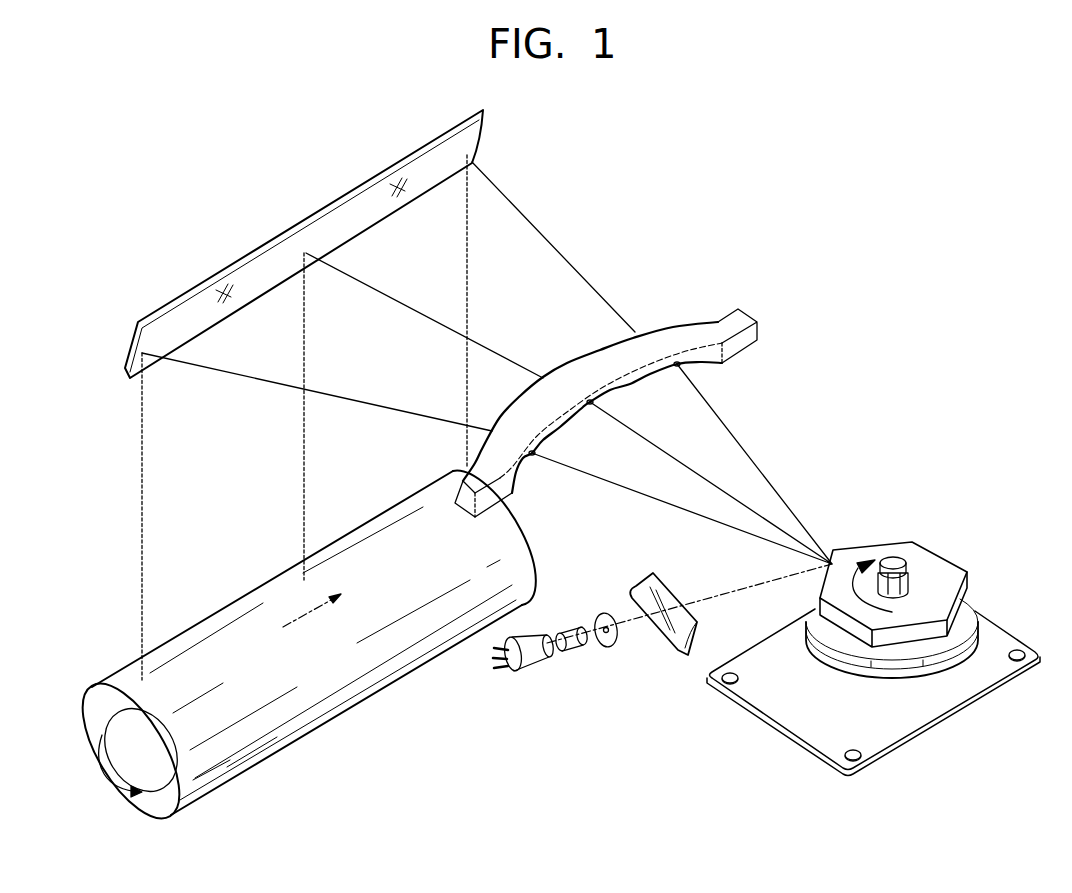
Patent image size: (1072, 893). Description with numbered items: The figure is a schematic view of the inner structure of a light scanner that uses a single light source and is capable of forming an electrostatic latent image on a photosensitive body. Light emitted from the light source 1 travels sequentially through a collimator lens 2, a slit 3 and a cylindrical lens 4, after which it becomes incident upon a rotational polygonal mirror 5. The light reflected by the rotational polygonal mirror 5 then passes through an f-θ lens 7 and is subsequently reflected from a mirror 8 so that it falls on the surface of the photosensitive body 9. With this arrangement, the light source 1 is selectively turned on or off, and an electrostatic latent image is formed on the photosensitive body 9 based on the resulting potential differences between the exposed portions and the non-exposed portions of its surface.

The light source 1 is at (523, 663).
The collimator lens 2 is at (570, 647).
The slit 3 is at (608, 645).
The cylindrical lens 4 is at (680, 655).
The rotational polygonal mirror 5 is at (877, 536).
The f-θ lens 7 is at (747, 317).
The mirror 8 is at (310, 217).
The photosensitive body 9 is at (257, 588).